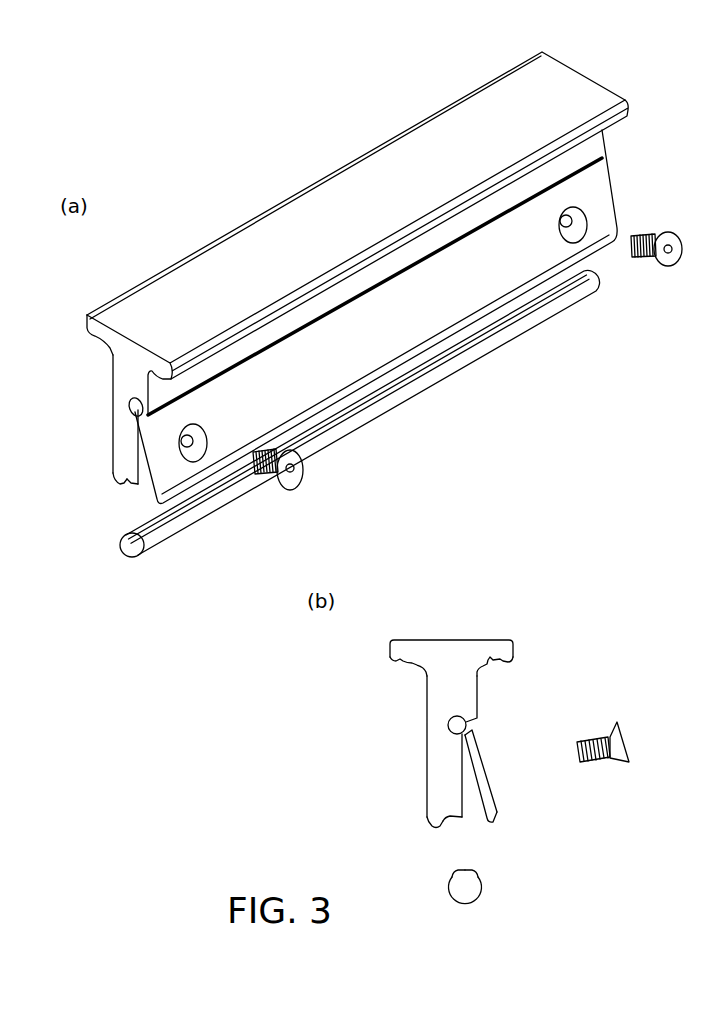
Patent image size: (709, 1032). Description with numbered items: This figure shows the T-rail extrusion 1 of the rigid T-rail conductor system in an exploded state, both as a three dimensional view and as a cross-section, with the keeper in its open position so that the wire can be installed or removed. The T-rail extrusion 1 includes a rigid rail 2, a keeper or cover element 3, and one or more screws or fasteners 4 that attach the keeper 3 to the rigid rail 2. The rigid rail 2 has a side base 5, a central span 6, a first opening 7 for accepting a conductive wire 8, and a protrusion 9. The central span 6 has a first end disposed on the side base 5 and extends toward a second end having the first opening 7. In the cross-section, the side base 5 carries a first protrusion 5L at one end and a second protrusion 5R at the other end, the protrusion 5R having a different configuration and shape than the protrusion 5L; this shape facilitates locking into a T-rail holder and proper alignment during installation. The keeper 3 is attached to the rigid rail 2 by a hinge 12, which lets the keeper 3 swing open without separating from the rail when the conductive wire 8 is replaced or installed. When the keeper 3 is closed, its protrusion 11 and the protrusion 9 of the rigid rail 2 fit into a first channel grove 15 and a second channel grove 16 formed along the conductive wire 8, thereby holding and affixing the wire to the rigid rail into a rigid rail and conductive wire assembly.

The T-rail extrusion 1 is at (311, 106).
The rigid rail 2 is at (505, 70).
The keeper or cover element 3 is at (600, 180).
The screw 4 is at (665, 258).
The side base 5 is at (390, 168).
The first protrusion 5L is at (400, 652).
The second protrusion 5R is at (505, 652).
The central span 6 is at (128, 378).
The first opening 7 is at (138, 490).
The conductive wire 8 is at (207, 522).
The protrusion 9 is at (118, 478).
The protrusion of keeper 11 is at (490, 821).
The hinge 12 is at (463, 724).
The first channel grove 15 is at (480, 873).
The second channel grove 16 is at (450, 873).